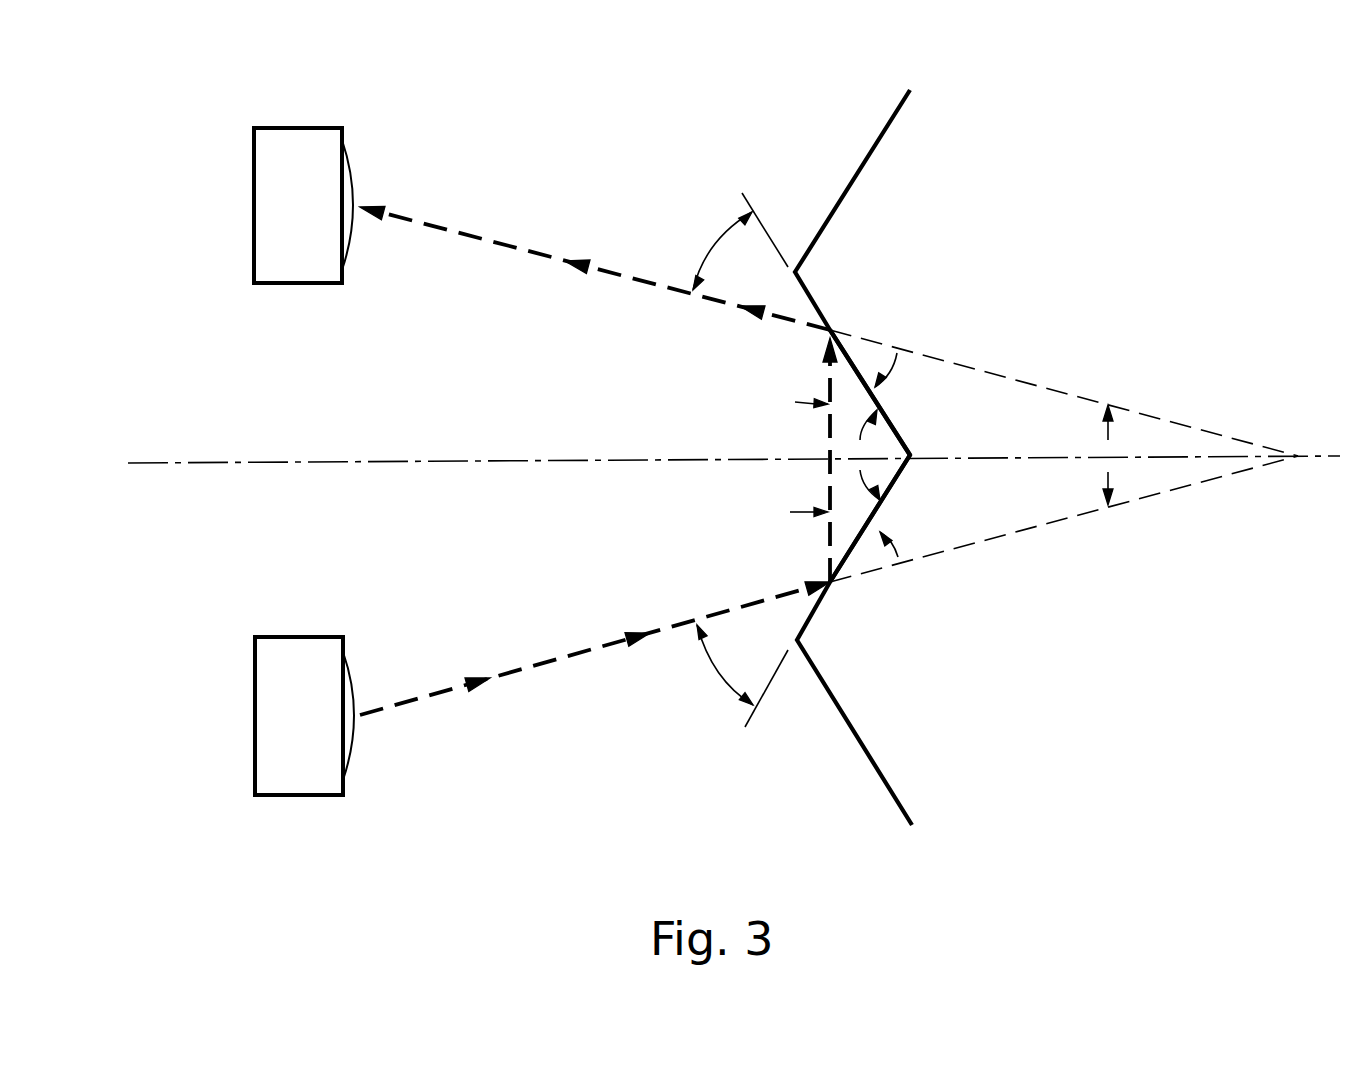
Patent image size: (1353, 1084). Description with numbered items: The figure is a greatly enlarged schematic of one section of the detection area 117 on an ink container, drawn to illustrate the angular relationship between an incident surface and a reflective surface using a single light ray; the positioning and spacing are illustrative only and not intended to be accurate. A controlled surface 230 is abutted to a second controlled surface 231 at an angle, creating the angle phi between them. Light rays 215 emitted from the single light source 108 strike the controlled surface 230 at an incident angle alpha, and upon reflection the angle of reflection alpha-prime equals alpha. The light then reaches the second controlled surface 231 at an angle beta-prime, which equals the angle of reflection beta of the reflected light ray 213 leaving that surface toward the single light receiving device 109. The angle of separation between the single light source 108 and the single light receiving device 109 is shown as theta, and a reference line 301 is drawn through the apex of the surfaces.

The single light source 108 is at (304, 716).
The single light receiving device 109 is at (303, 205).
The detection area 117 is at (820, 175).
The reflected light ray 213 is at (450, 228).
The light rays 215 is at (566, 657).
The controlled surface 230 is at (890, 490).
The second controlled surface 231 is at (897, 428).
The optical axis 301 is at (543, 462).